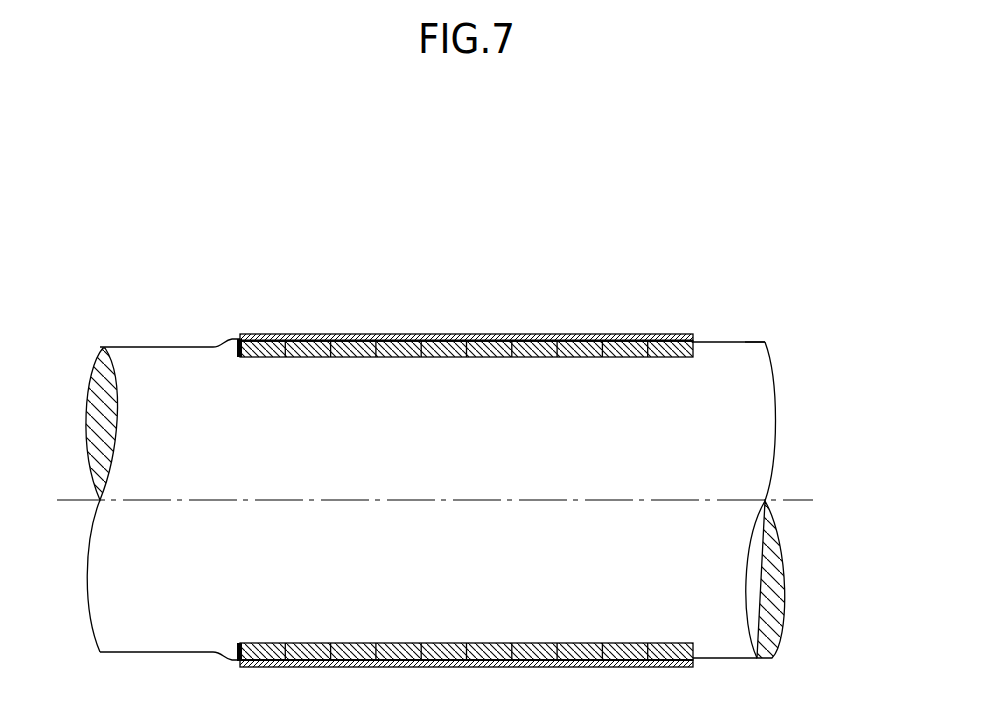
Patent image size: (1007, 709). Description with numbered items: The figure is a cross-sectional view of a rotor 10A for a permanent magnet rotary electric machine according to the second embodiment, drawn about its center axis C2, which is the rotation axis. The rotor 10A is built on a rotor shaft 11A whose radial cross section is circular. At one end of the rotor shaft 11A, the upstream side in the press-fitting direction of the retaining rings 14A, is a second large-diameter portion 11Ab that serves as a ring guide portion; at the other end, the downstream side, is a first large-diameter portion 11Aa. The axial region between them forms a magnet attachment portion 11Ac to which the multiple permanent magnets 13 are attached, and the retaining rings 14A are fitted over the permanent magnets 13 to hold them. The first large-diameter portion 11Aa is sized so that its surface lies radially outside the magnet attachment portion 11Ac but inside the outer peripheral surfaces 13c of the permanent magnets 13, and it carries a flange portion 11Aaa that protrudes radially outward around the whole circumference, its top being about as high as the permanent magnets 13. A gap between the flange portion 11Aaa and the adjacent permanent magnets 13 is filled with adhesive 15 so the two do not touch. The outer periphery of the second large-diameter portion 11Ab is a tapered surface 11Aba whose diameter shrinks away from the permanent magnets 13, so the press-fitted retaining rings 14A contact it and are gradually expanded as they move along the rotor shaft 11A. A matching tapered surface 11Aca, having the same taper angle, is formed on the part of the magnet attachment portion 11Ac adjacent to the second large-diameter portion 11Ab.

The rotor 10A is at (776, 212).
The rotor shaft 11A is at (477, 446).
The first large-diameter portion 11Aa is at (122, 347).
The flange portion 11Aaa is at (226, 340).
The second large-diameter portion 11Ab is at (706, 331).
The tapered surface 11Aba is at (752, 341).
The magnet attachment portion 11Ac is at (493, 341).
The tapered surface 11Aca is at (692, 337).
The permanent magnets 13 is at (347, 326).
The outer peripheral surfaces 13c is at (307, 333).
The retaining rings 14A is at (408, 326).
The adhesive 15 is at (238, 326).
The center axis C2 is at (70, 500).